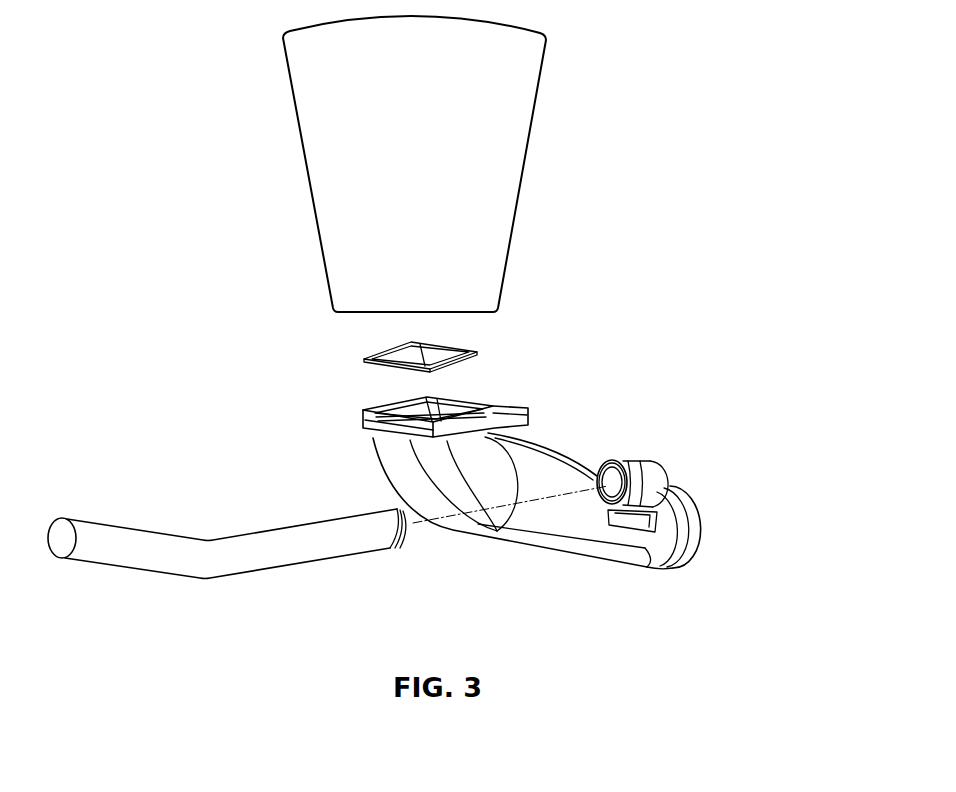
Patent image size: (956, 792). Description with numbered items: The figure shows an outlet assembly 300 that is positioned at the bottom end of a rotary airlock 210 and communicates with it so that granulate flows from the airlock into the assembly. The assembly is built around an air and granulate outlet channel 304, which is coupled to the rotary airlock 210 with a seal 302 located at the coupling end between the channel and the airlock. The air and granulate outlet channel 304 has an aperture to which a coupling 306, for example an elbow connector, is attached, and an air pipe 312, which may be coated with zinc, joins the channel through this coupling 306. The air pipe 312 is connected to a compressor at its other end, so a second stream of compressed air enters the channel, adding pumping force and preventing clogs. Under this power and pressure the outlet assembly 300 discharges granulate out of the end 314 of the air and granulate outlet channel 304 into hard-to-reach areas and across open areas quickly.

The outlet assembly 300 is at (218, 377).
The rotary airlock 210 is at (515, 110).
The seal 302 is at (488, 350).
The air and granulate outlet channel 304 is at (562, 462).
The coupling 306 is at (660, 474).
The air pipe 312 is at (267, 540).
The end 314 is at (705, 531).